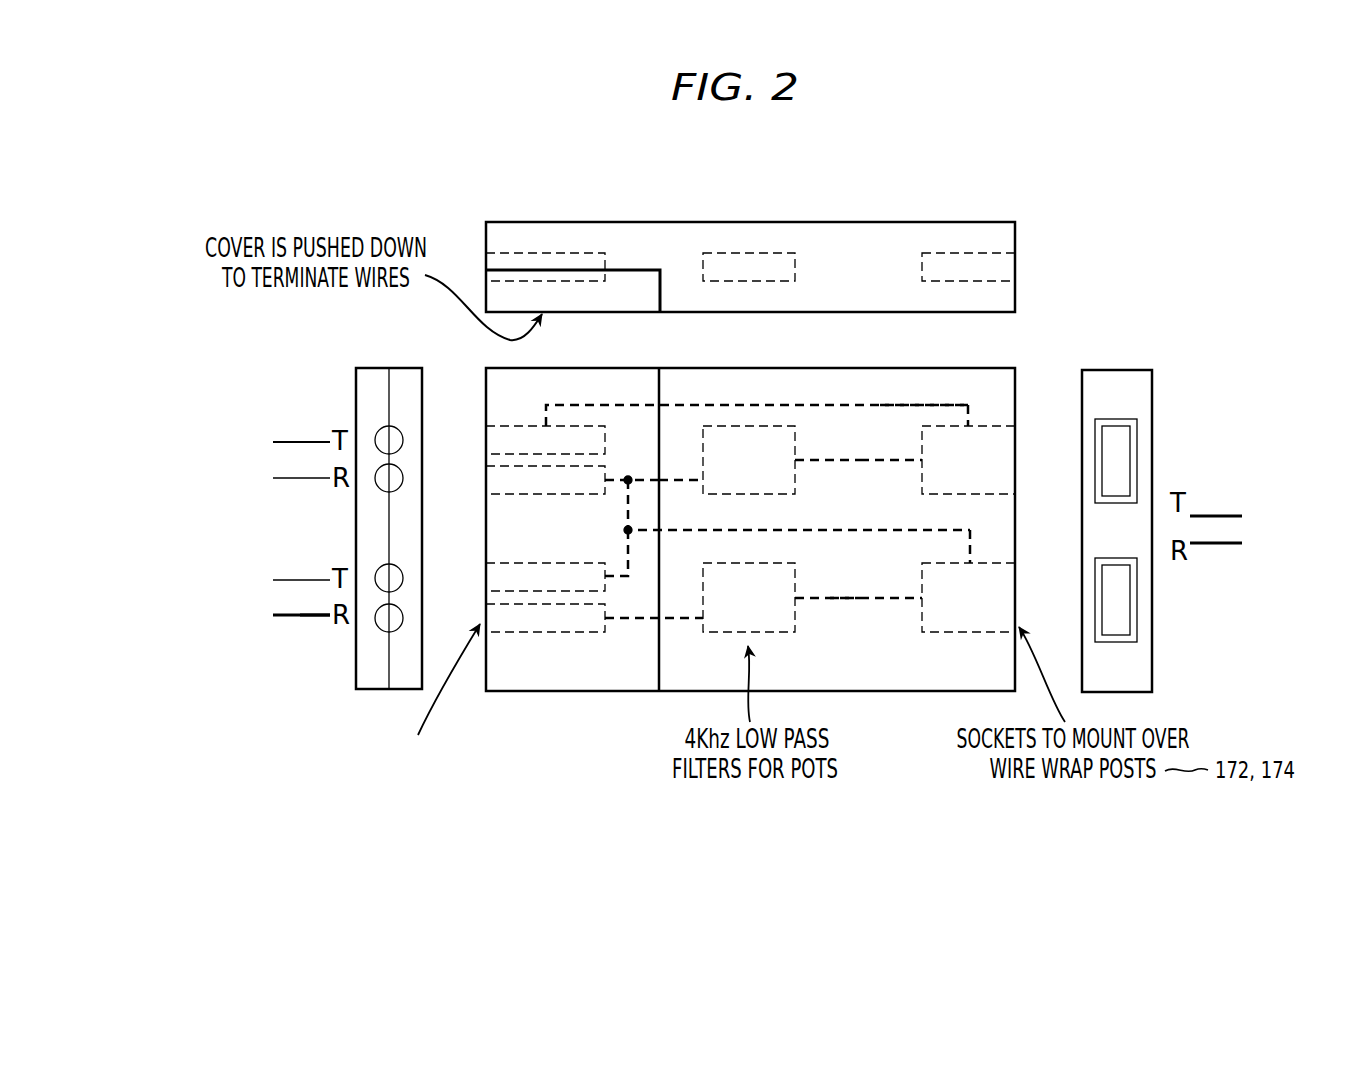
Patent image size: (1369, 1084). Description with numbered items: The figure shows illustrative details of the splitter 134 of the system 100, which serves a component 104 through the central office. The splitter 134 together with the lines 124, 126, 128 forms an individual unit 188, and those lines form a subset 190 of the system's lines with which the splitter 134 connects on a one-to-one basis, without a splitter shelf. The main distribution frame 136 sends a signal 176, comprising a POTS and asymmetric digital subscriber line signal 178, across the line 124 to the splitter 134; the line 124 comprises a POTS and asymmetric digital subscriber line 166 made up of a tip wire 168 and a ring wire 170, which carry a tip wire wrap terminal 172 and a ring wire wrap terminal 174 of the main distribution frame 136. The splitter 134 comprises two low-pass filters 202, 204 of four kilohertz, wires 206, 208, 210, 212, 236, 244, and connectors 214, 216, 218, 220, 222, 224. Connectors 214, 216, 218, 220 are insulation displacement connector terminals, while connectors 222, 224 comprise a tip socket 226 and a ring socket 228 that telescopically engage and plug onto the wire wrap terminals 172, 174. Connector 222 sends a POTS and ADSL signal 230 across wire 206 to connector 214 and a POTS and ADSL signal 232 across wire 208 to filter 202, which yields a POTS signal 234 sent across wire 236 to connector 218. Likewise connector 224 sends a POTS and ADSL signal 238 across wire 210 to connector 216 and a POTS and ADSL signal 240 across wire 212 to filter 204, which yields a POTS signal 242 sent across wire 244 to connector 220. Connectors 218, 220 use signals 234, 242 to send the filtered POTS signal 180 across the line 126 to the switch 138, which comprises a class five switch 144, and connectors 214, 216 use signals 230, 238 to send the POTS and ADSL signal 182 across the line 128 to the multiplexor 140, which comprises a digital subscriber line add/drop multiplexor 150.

The system 100 is at (718, 142).
The component 104 is at (960, 796).
The line 124 is at (1226, 508).
The line 126 is at (314, 626).
The line 128 is at (280, 426).
The splitter 134 is at (1066, 177).
The main distribution frame 136 is at (1304, 547).
The switch 138 is at (132, 634).
The multiplexor 140 is at (124, 415).
The Class 5 switch 144 is at (258, 615).
The digital subscriber line add/drop multiplexor 150 is at (222, 480).
The POTS and asymmetric digital subscriber line 166 is at (1250, 558).
The wire 168 is at (1194, 508).
The wire 170 is at (1196, 550).
The wire wrap terminal 172 is at (1207, 513).
The wire wrap terminal 174 is at (1217, 545).
The signal 176 is at (1248, 512).
The POTS and asymmetric digital subscriber line signal 178 is at (1232, 512).
The POTS signal 180 is at (286, 626).
The POTS and asymmetric digital subscriber line signal 182 is at (311, 428).
The individual unit 188 is at (530, 820).
The subset 190 is at (170, 780).
The filter 202 is at (732, 473).
The filter 204 is at (732, 611).
The wire 206 is at (910, 404).
The wire 208 is at (888, 462).
The wire 210 is at (872, 534).
The wire 212 is at (843, 602).
The connector 214 is at (522, 425).
The connector 216 is at (505, 495).
The connector 218 is at (562, 563).
The connector 220 is at (525, 633).
The connector 222 is at (990, 422).
The connector 224 is at (968, 633).
The socket 226 is at (998, 461).
The socket 228 is at (998, 597).
The POTS and asymmetric digital subscriber line signal 230 is at (700, 404).
The POTS and asymmetric digital subscriber line signal 232 is at (812, 460).
The POTS signal 234 is at (680, 478).
The wire 236 is at (640, 478).
The POTS and asymmetric digital subscriber line signal 238 is at (822, 529).
The POTS and asymmetric digital subscriber line signal 240 is at (814, 600).
The POTS signal 242 is at (686, 620).
The wire 244 is at (628, 620).